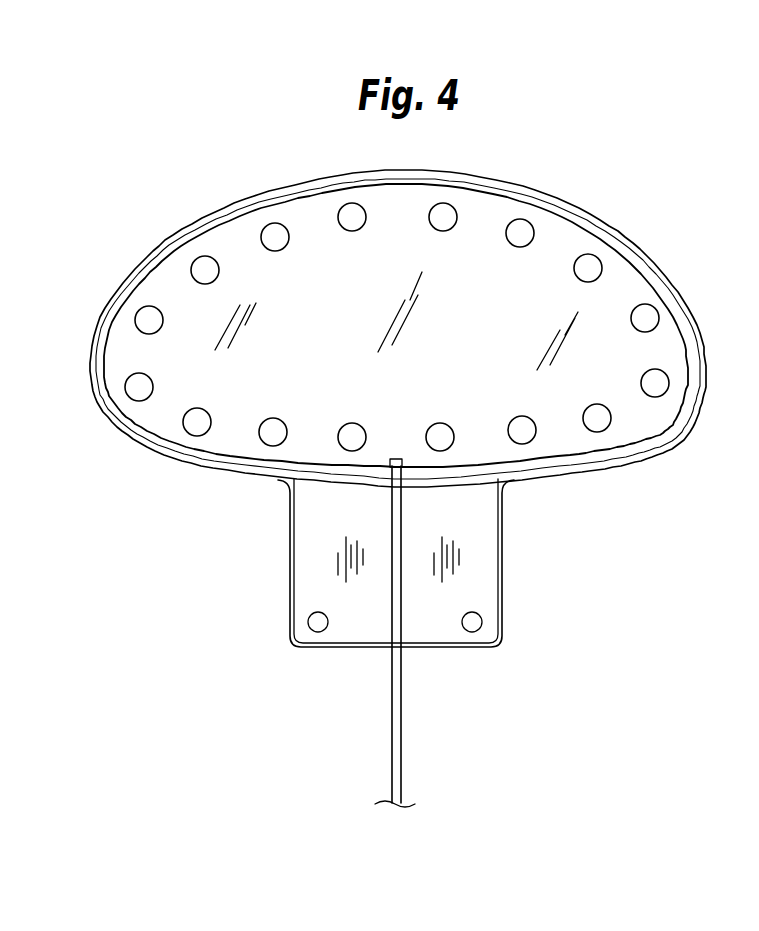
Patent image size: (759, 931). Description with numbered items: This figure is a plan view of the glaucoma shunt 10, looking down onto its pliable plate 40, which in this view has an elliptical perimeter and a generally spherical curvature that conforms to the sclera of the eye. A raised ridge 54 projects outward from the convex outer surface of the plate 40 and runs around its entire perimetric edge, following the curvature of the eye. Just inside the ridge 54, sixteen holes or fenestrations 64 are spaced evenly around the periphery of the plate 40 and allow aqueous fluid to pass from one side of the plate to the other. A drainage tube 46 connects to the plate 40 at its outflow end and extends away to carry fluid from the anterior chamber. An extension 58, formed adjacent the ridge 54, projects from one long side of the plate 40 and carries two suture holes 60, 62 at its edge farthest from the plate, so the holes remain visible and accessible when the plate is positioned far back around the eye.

The glaucoma shunt 10 is at (583, 138).
The pliable plate 40 is at (338, 341).
The drainage tube 46 is at (392, 748).
The raised ridge 54 is at (647, 256).
The extension 58 is at (501, 565).
The suture hole 60 is at (312, 627).
The suture hole 62 is at (480, 623).
The fenestrations 64 is at (261, 237).